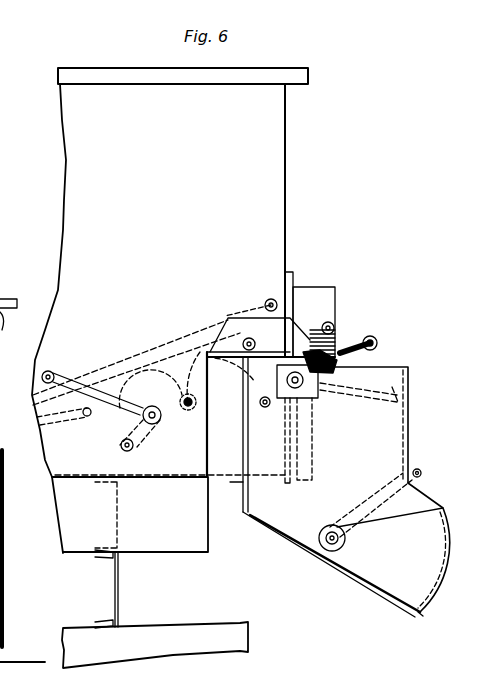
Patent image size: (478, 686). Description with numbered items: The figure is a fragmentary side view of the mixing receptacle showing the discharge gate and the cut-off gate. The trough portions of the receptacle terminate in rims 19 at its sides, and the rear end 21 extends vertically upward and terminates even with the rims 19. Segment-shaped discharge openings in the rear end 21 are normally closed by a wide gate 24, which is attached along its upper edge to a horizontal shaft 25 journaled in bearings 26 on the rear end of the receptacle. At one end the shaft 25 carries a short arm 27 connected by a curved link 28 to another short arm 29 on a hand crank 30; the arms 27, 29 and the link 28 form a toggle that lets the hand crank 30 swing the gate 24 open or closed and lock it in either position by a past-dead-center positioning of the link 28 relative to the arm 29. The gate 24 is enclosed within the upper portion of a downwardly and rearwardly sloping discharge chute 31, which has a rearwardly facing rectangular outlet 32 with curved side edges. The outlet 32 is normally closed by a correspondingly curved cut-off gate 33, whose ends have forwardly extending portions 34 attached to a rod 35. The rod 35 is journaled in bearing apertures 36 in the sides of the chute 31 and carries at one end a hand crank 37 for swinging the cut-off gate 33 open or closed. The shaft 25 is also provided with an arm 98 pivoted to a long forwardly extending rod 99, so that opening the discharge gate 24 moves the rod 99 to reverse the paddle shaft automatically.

The rims 19 is at (193, 84).
The rear end 21 is at (287, 197).
The gate 24 is at (305, 437).
The shaft 25 is at (350, 368).
The bearings 26 is at (322, 358).
The short arm 27 is at (320, 330).
The curved link 28 is at (200, 352).
The short arm 29 is at (184, 420).
The hand crank 30 is at (103, 405).
The discharge chute 31 is at (283, 518).
The outlet 32 is at (425, 612).
The cut-off gate 33 is at (436, 580).
The forwardly extending portions 34 is at (373, 558).
The rod 35 is at (330, 548).
The bearing apertures 36 is at (333, 524).
The hand crank 37 is at (421, 474).
The arm 98 is at (378, 343).
The rod 99 is at (92, 388).